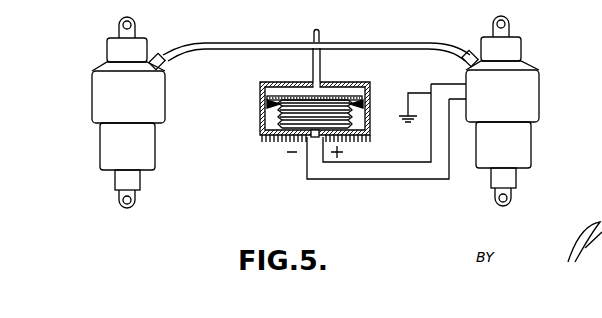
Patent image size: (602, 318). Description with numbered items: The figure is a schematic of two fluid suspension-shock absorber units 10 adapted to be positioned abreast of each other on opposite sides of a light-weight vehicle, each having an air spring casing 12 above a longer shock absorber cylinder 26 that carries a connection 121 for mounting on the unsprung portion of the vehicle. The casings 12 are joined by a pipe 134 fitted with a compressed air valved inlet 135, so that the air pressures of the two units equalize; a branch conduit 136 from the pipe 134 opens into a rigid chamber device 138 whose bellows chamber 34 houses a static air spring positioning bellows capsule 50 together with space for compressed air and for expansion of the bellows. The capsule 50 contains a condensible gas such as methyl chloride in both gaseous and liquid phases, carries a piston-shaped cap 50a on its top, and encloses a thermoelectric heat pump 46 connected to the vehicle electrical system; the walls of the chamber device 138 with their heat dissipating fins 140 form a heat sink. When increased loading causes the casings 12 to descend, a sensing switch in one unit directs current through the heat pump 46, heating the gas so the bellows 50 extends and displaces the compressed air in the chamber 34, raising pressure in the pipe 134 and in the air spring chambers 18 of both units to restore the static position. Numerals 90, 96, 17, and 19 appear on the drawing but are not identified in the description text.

The suspension-shock absorber unit 10 is at (82, 91).
The air spring casing 12 is at (149, 95).
The shock absorber cylinder 26 is at (113, 144).
The upper cap 90 is at (143, 56).
The upper mounting eye 96 is at (135, 22).
The connection 121 is at (119, 203).
The pipe 134 is at (417, 43).
The compressed air valved inlet 135 is at (320, 31).
The branch conduit 136 is at (321, 74).
The bellows chamber 34 is at (306, 120).
The bellows capsule 50 is at (290, 101).
The piston-shaped cap 50a is at (290, 106).
The rigid chamber device 138 is at (262, 118).
The heat dissipating fins 140 is at (266, 141).
The thermoelectric heat pump 46 is at (300, 136).
The air spring chamber 18 is at (447, 84).
The ground 17 is at (408, 124).
The lead wire 19 is at (446, 151).